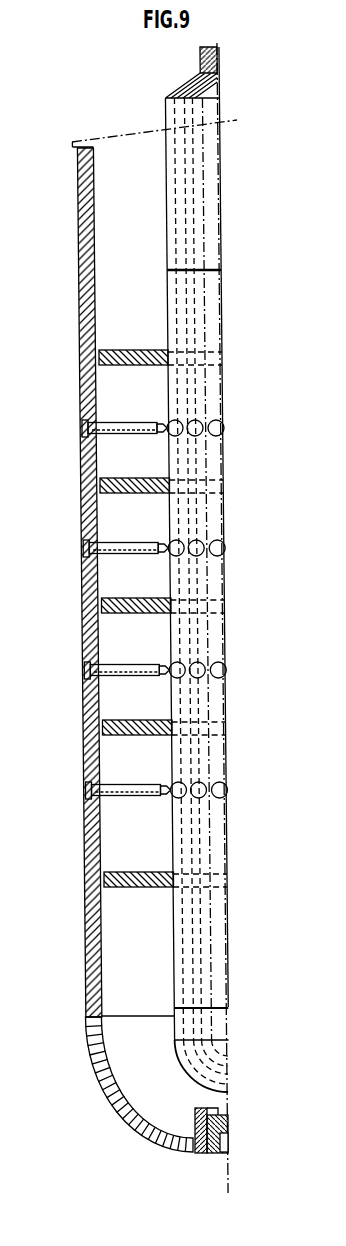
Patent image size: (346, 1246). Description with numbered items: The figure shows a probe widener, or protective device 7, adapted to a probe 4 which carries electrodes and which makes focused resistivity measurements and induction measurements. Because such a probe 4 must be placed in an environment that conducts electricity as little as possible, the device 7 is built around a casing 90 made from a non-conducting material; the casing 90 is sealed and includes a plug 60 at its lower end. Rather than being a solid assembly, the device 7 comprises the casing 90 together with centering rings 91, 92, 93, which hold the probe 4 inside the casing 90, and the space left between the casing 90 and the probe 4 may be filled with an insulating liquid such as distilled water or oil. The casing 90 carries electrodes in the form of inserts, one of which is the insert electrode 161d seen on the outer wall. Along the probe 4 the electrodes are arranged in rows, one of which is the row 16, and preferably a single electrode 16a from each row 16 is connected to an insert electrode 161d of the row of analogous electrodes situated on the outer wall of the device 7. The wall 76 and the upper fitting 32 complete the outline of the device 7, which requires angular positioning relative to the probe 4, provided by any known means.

The device 7 is at (90, 560).
The side wall 76 is at (77, 180).
The upper flange 32 is at (198, 51).
The insert electrode 161d is at (80, 422).
The electrode 16a is at (167, 423).
The row 16 is at (232, 421).
The centering ring 93 is at (122, 600).
The centering ring 92 is at (122, 720).
The centering ring 91 is at (122, 873).
The probe 4 is at (155, 933).
The casing 90 is at (104, 1117).
The plug 60 is at (218, 1153).